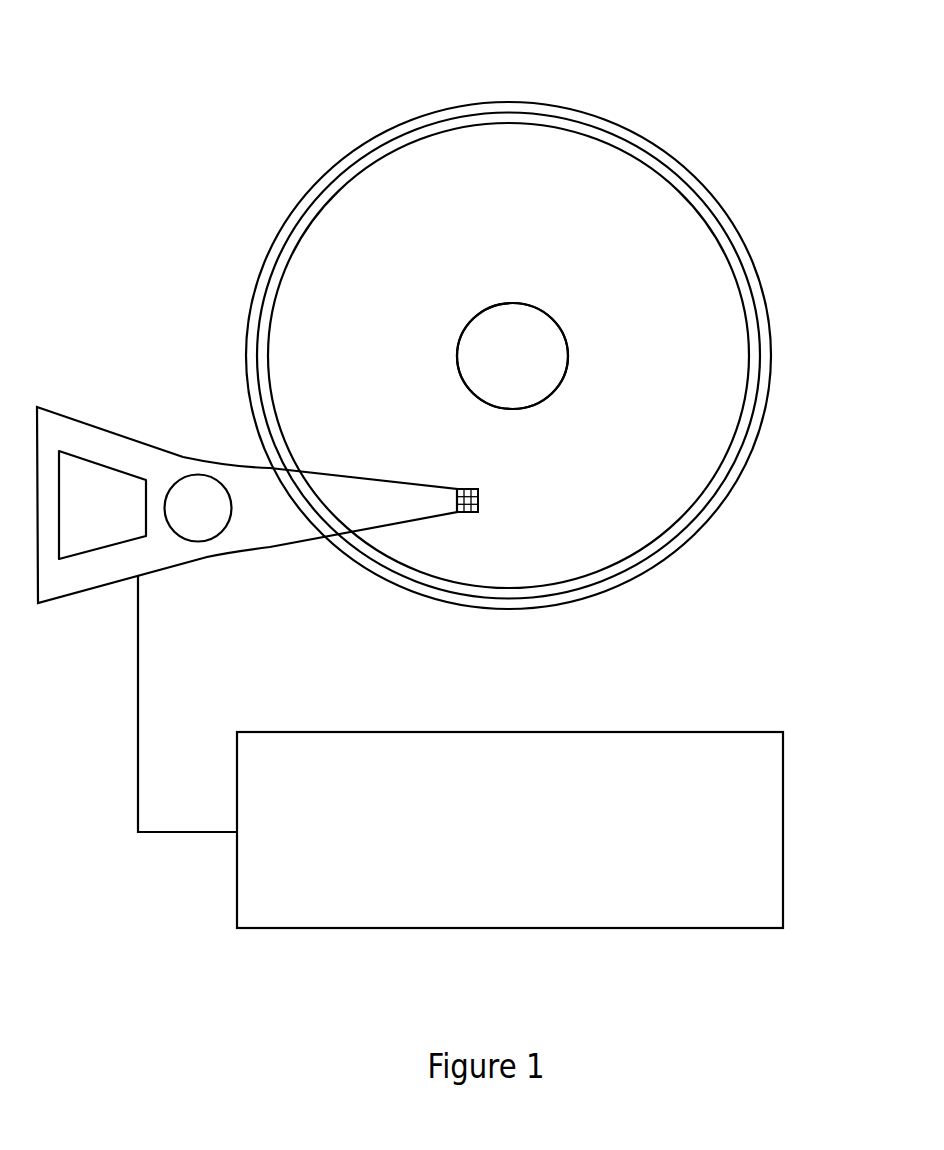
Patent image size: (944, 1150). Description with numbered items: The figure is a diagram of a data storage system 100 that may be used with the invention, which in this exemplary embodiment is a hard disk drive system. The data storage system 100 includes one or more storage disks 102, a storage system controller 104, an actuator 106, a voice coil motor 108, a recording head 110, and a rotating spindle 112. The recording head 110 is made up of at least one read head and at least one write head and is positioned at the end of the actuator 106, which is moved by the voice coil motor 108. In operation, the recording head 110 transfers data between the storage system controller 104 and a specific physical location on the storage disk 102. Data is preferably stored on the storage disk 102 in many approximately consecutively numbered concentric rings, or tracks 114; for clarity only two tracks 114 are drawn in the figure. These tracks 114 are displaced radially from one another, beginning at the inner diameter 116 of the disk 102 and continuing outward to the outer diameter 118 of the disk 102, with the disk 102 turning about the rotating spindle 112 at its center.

The data storage system 100 is at (235, 118).
The storage disk 102 is at (657, 125).
The storage system controller 104 is at (805, 795).
The actuator 106 is at (370, 478).
The voice coil motor 108 is at (104, 577).
The recording head 110 is at (486, 475).
The rotating spindle 112 is at (568, 310).
The tracks 114 is at (737, 222).
The inner diameter 116 is at (566, 409).
The outer diameter 118 is at (697, 565).